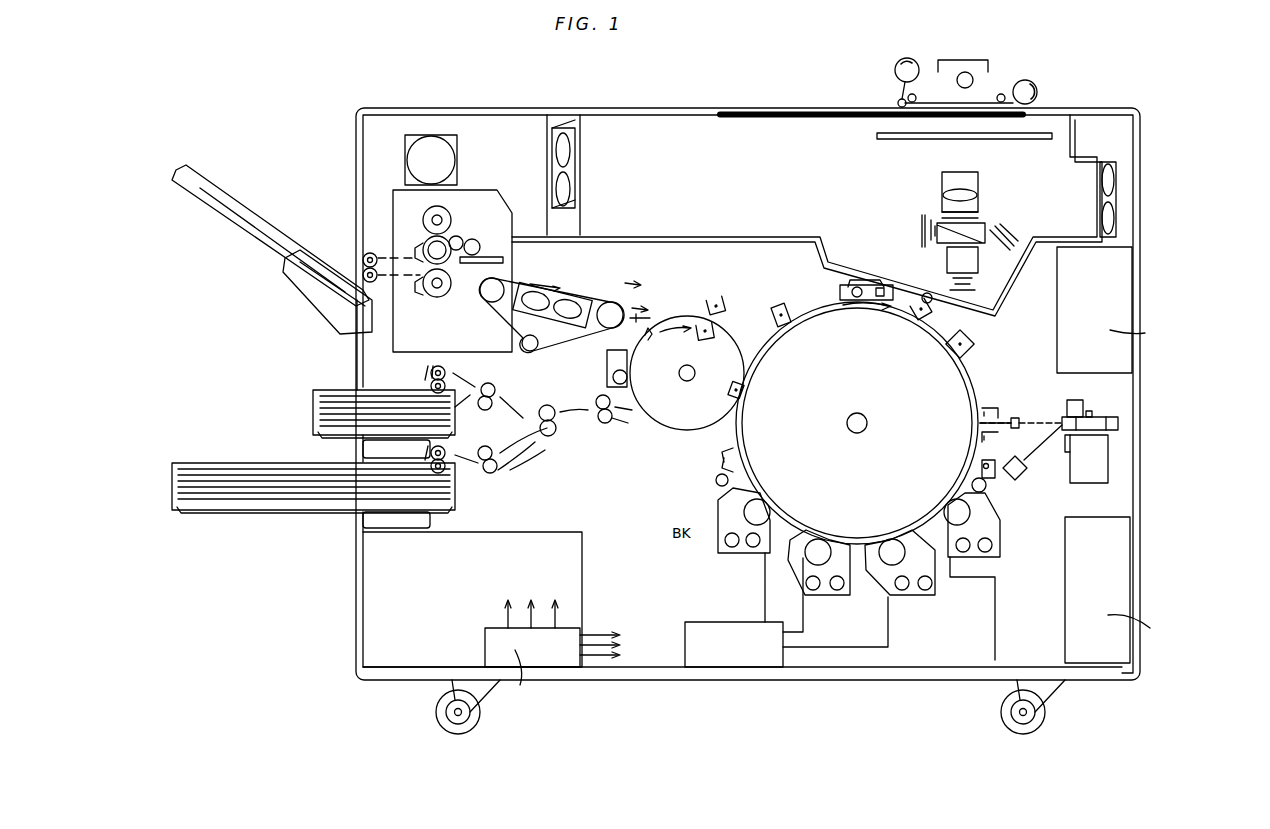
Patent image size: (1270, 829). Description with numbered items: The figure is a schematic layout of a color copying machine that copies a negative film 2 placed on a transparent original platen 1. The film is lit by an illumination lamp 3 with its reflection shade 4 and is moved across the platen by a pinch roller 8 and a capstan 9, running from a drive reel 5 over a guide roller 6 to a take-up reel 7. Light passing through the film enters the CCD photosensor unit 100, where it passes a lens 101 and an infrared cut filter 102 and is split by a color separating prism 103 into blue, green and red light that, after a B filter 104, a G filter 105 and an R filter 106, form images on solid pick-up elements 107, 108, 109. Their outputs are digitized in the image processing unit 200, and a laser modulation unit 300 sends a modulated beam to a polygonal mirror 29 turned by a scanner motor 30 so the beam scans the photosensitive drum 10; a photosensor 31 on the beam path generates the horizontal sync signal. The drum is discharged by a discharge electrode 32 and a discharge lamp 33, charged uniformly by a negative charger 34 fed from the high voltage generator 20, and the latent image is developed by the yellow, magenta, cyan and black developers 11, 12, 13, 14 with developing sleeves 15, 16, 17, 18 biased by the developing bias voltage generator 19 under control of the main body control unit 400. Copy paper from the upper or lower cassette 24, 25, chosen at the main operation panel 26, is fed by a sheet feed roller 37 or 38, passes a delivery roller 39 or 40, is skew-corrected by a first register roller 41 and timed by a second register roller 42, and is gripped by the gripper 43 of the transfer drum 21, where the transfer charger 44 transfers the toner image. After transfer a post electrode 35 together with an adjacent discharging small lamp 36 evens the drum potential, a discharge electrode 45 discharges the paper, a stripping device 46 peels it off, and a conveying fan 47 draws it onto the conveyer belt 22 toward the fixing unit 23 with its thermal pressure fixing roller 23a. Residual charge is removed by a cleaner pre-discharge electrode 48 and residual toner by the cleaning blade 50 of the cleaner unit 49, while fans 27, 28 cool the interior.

The original platen 1 is at (748, 108).
The negative film 2 is at (985, 103).
The illumination lamp 3 is at (968, 72).
The reflection shade 4 is at (958, 59).
The drive reel 5 is at (1037, 92).
The guide roller 6 is at (1005, 95).
The take-up reel 7 is at (903, 58).
The pinch roller 8 is at (918, 98).
The capstan 9 is at (898, 103).
The photosensitive drum 10 is at (975, 385).
The yellow developer 11 is at (1000, 550).
The magenta developer 12 is at (937, 590).
The cyan developer 13 is at (841, 596).
The black developer 14 is at (742, 556).
The developing sleeve 15 is at (988, 490).
The developing sleeve 16 is at (885, 560).
The developing sleeve 17 is at (805, 553).
The developing sleeve 18 is at (762, 508).
The developing bias voltage generator 19 is at (728, 650).
The high voltage generator 20 is at (578, 628).
The transfer drum 21 is at (660, 428).
The conveyer belt 22 is at (580, 300).
The fixing unit 23 is at (393, 200).
The thermal pressure fixing roller 23a is at (437, 297).
The upper cassette 24 is at (325, 390).
The lower cassette 25 is at (276, 512).
The main operation panel 26 is at (885, 137).
The fan 27 is at (1117, 198).
The fan 28 is at (556, 130).
The polygonal mirror 29 is at (1120, 423).
The scanner motor 30 is at (1108, 460).
The photosensor 31 is at (1020, 418).
The discharge electrode 32 is at (935, 310).
The discharge lamp 33 is at (905, 290).
The negative charger 34 is at (975, 345).
The post electrode 35 is at (720, 462).
The cleaning roller 36 is at (716, 482).
The sheet feed roller 37 is at (455, 373).
The sheet feed roller 38 is at (455, 453).
The delivery roller 39 is at (497, 390).
The delivery roller 40 is at (488, 475).
The first register roller 41 is at (549, 438).
The second register roller 42 is at (604, 425).
The gripper 43 is at (645, 338).
The transfer charger 44 is at (732, 398).
The discharge electrode 45 is at (722, 298).
The stripping device 46 is at (648, 307).
The conveying fan 47 is at (555, 320).
The cleaner pre-discharge electrode 48 is at (773, 315).
The cleaner unit 49 is at (840, 292).
The cleaning blade 50 is at (848, 285).
The CCD photosensor unit 100 is at (1110, 118).
The lens 101 is at (945, 180).
The infrared cut filter 102 is at (980, 213).
The color separating prism 103 is at (948, 243).
The B filter 104 is at (1002, 237).
The G filter 105 is at (978, 262).
The R filter 106 is at (931, 226).
The solid pick-up element 107 is at (1015, 240).
The solid pick-up element 108 is at (978, 286).
The solid pick-up element 109 is at (920, 230).
The image processing unit 200 is at (1120, 280).
The laser modulation unit 300 is at (1025, 478).
The main body control unit 400 is at (1120, 566).